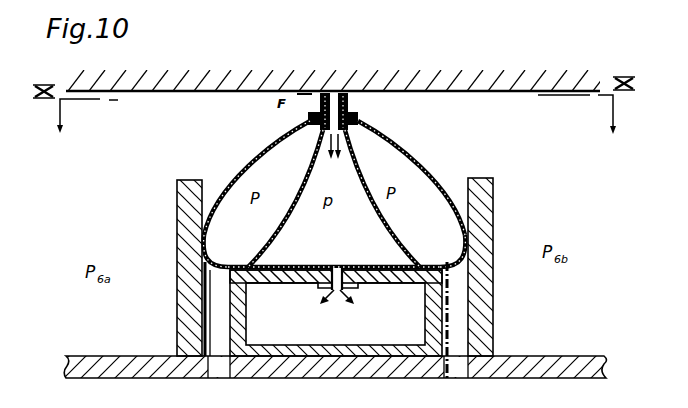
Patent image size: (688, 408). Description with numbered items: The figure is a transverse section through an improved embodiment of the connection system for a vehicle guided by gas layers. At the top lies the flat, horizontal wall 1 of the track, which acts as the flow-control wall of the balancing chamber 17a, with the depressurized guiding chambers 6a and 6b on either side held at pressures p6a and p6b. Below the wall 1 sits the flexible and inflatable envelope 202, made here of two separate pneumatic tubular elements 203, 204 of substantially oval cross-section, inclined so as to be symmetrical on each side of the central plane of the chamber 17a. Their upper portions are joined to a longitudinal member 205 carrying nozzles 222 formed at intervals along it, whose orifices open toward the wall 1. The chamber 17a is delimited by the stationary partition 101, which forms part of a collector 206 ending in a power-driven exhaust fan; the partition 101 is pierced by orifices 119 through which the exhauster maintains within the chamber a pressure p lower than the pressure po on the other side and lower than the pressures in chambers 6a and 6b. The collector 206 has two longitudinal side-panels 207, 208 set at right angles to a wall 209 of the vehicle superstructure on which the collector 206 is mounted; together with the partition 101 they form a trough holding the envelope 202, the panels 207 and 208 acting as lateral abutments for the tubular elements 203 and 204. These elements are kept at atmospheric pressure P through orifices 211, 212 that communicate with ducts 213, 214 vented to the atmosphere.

The wall 1 is at (138, 91).
The depressurized chamber 6a is at (87, 142).
The depressurized chamber 6b is at (577, 114).
The stationary partition 101 is at (277, 274).
The balancing chamber 17a is at (371, 248).
The orifices 119 is at (336, 268).
The flexible and inflatable envelope 202 is at (344, 210).
The pneumatic tubular element 203 is at (438, 181).
The pneumatic tubular element 204 is at (262, 157).
The longitudinal member 205 is at (352, 116).
The collector 206 is at (336, 316).
The longitudinal side-panel 207 is at (488, 200).
The longitudinal side-panel 208 is at (182, 222).
The wall 209 is at (557, 362).
The orifice 211 is at (444, 260).
The orifice 212 is at (219, 262).
The duct 213 is at (460, 358).
The duct 214 is at (218, 358).
The nozzles 222 is at (337, 92).